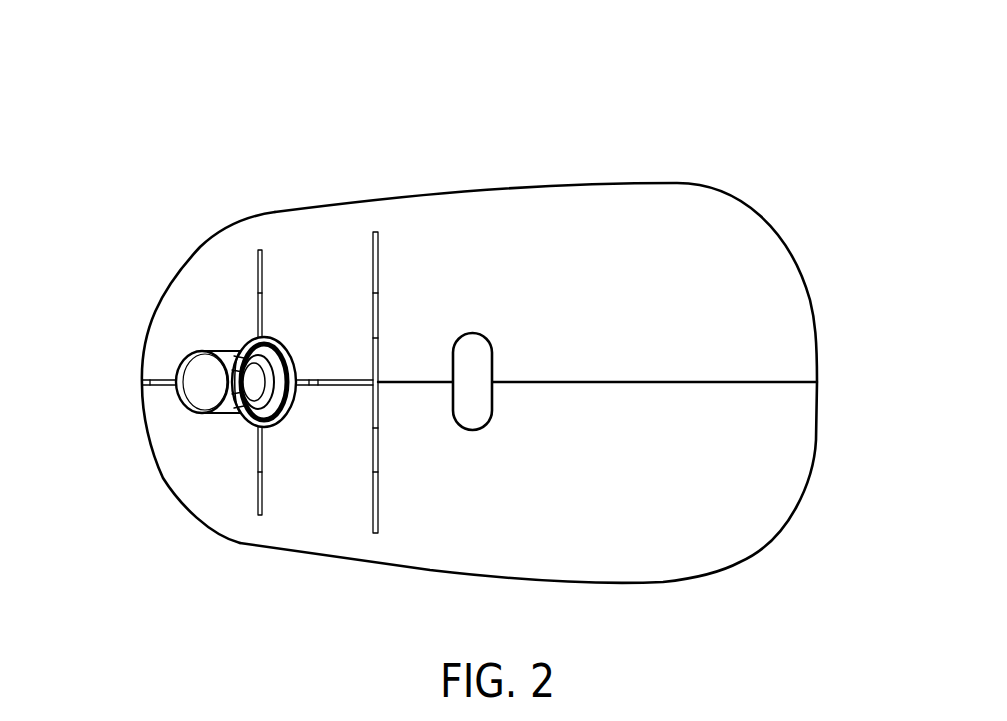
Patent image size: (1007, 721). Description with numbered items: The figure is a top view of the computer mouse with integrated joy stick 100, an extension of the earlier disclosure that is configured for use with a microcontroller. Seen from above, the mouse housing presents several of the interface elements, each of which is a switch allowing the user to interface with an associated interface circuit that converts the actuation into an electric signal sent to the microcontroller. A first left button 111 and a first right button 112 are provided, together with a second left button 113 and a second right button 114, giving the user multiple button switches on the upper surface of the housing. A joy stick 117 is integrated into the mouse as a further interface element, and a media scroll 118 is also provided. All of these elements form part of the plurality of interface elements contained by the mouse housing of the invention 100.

The computer mouse with integrated joy stick 100 is at (170, 138).
The first left button 111 is at (200, 465).
The first right button 112 is at (222, 277).
The second left button 113 is at (317, 498).
The second right button 114 is at (328, 270).
The joy stick 117 is at (177, 373).
The media scroll 118 is at (490, 337).